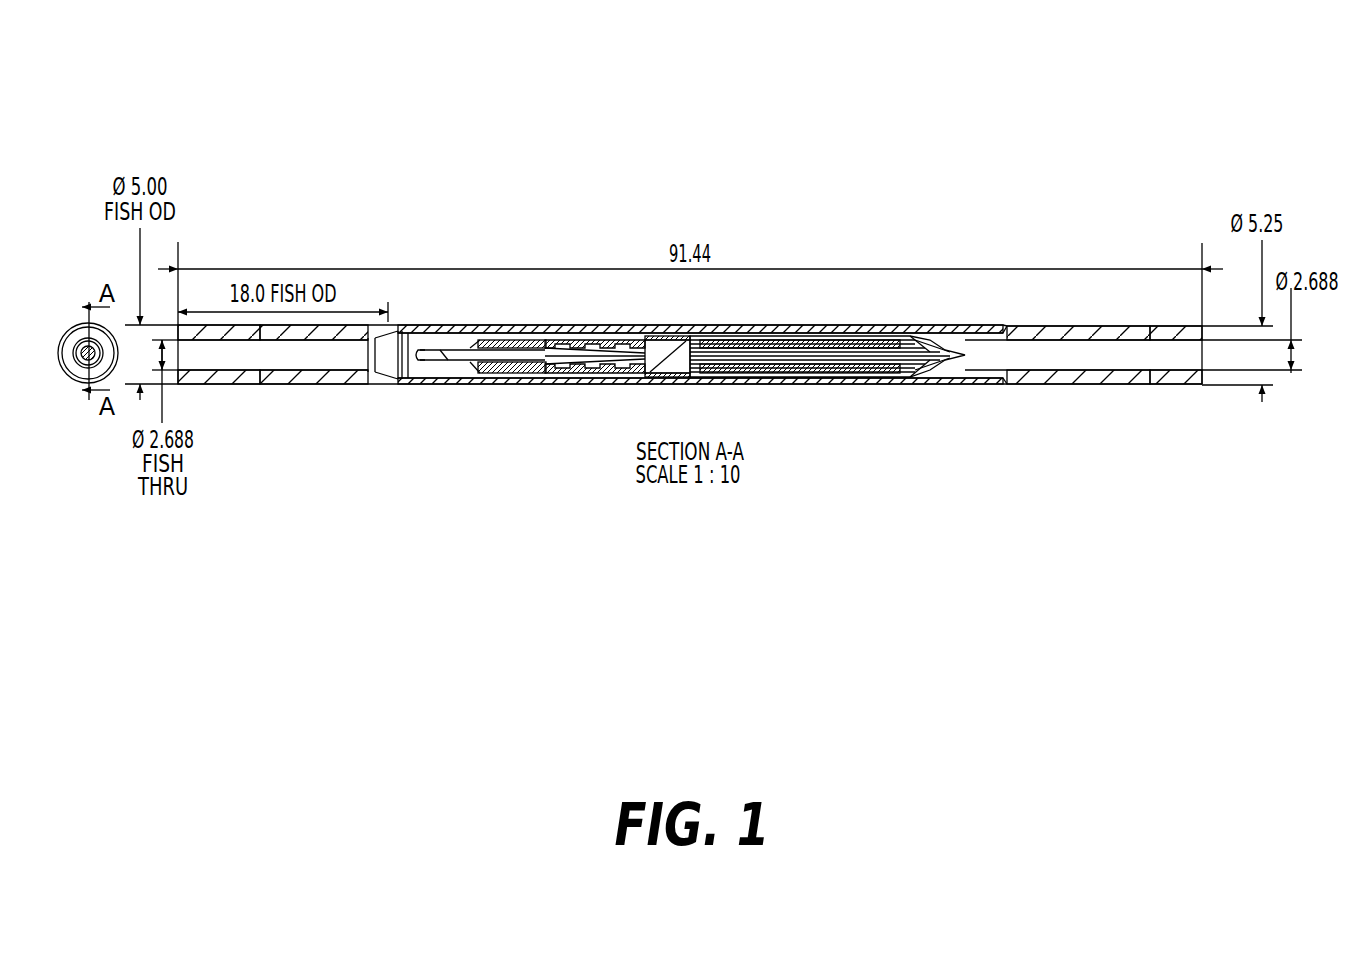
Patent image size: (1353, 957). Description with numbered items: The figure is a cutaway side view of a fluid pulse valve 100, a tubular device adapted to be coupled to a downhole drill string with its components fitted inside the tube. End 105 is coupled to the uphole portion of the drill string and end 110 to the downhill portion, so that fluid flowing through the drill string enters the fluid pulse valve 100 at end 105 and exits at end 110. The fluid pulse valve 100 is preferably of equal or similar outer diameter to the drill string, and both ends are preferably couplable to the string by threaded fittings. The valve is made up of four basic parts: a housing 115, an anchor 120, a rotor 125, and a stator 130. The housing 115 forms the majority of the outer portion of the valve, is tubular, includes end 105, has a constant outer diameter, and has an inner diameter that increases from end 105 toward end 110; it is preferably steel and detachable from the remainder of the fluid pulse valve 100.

The fluid pulse valve 100 is at (366, 138).
The end 105 is at (172, 385).
The end 110 is at (1195, 387).
The housing 115 is at (295, 375).
The anchor 120 is at (490, 366).
The rotor 125 is at (858, 366).
The stator 130 is at (1032, 381).